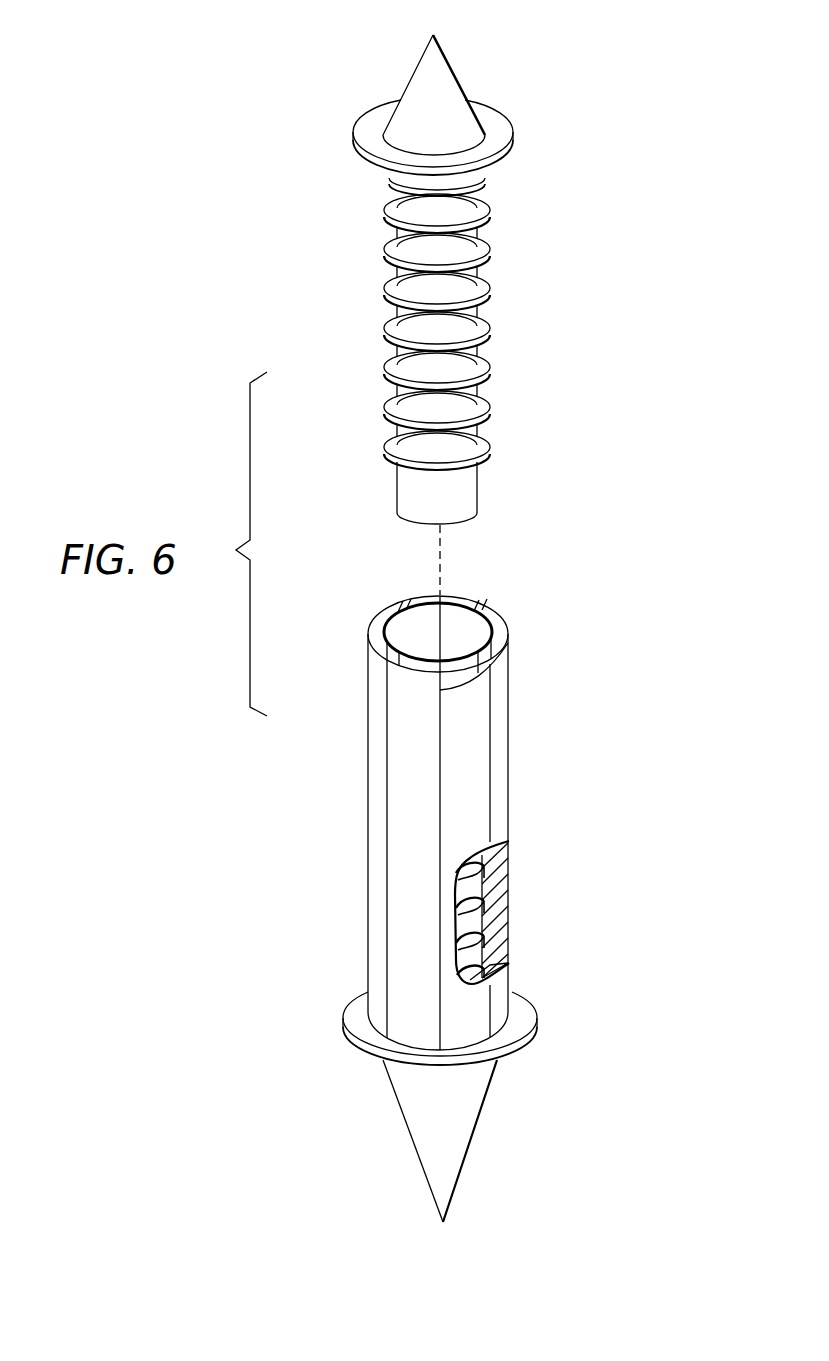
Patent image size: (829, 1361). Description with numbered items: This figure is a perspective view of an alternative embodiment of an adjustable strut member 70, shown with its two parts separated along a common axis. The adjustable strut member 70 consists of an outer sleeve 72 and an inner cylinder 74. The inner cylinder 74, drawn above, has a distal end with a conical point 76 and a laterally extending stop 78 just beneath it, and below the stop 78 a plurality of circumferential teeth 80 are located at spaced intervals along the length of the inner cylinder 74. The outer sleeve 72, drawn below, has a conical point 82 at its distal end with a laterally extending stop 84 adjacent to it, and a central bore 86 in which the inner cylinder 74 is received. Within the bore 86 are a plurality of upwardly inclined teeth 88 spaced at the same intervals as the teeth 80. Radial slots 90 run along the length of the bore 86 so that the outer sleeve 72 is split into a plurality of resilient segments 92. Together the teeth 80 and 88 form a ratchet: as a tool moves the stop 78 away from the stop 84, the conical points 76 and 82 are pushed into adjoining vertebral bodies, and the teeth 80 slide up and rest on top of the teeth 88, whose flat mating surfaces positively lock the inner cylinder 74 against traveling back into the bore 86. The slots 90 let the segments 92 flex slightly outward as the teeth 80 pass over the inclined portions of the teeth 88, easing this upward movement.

The adjustable strut member 70 is at (605, 512).
The outer sleeve 72 is at (510, 780).
The inner cylinder 74 is at (468, 397).
The conical point 76 is at (453, 68).
The laterally extending stop 78 is at (503, 127).
The circumferential teeth 80 is at (490, 328).
The conical point 82 is at (483, 1112).
The laterally extending stop 84 is at (530, 1012).
The central bore 86 is at (454, 627).
The upwardly inclined teeth 88 is at (482, 930).
The radial slots 90 is at (485, 682).
The resilient segments 92 is at (368, 655).